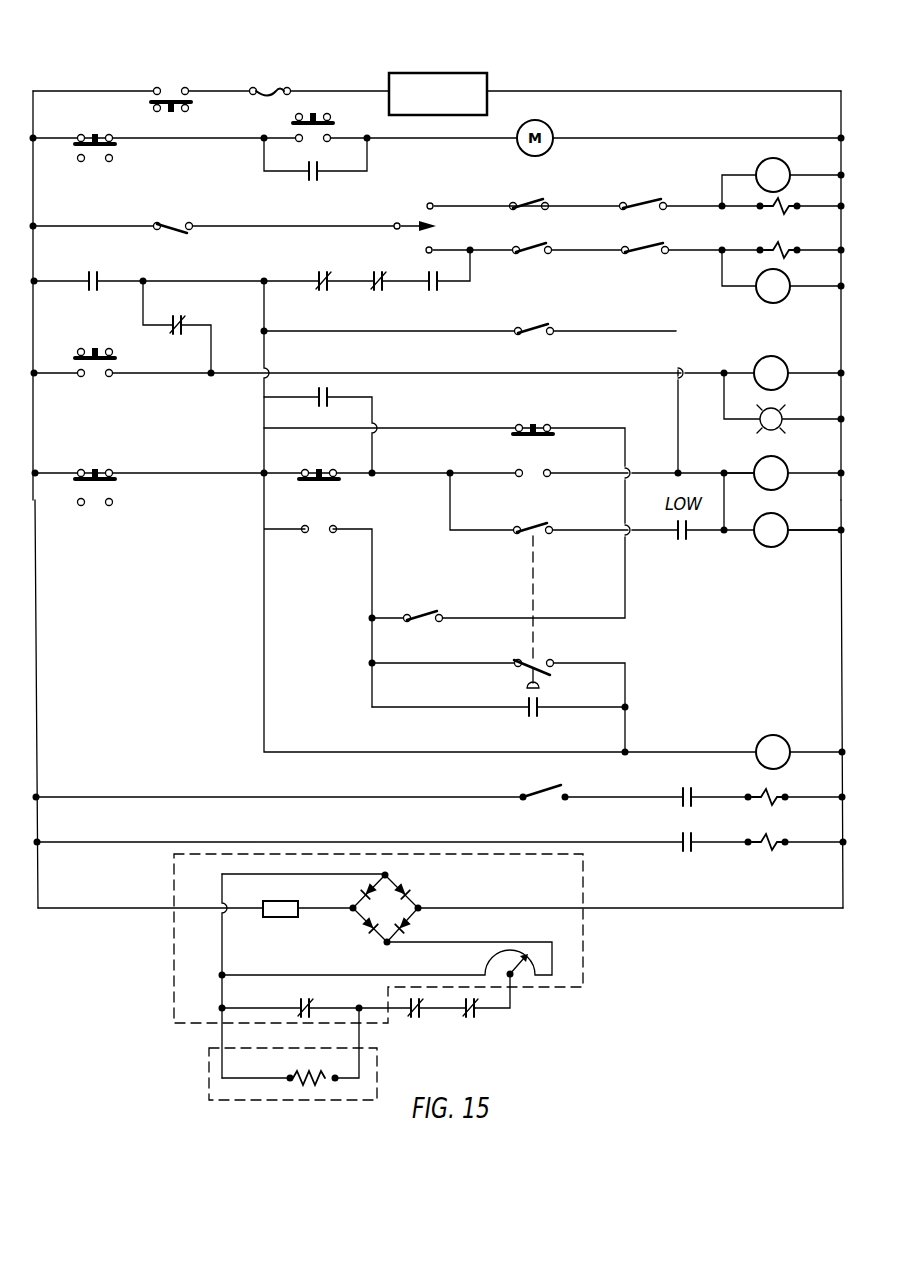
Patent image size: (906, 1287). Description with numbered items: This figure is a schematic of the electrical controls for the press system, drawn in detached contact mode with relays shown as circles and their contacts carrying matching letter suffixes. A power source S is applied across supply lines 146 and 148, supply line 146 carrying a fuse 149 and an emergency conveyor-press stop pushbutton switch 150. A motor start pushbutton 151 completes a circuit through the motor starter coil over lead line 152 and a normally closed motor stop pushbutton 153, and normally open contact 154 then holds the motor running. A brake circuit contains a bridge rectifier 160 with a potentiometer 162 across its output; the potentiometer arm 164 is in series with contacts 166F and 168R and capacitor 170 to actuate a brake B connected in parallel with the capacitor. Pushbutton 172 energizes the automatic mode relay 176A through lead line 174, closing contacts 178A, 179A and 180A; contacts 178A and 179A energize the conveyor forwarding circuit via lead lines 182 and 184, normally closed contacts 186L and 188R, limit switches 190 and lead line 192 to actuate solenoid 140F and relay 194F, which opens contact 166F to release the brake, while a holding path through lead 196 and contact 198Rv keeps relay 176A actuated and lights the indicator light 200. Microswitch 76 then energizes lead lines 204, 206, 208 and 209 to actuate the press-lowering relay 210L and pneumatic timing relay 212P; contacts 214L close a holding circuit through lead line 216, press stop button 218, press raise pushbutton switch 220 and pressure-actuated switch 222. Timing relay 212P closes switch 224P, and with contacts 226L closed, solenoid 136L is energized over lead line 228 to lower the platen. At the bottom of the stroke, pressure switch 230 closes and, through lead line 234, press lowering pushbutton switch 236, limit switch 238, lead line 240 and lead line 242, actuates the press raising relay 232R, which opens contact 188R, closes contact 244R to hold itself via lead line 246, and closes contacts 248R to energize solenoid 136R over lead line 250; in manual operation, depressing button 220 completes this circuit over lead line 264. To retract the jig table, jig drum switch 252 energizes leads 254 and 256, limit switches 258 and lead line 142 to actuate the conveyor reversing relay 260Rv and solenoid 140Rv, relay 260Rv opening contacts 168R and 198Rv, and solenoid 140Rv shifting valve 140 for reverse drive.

The supply line 146 is at (26, 94).
The supply line 148 is at (843, 115).
The valve 140 is at (40, 584).
The lead line 142 is at (842, 602).
The emergency conveyor-press stop pushbutton switch 150 is at (172, 93).
The fuse 149 is at (277, 87).
The power source S is at (443, 72).
The lead line 152 is at (55, 138).
The motor stop pushbutton 153 is at (98, 137).
The motor start pushbutton 151 is at (318, 124).
The normally open contact 154 is at (325, 177).
The lead 254 is at (250, 222).
The lead 256 is at (168, 222).
The jig drum switch 252 is at (403, 222).
The limit switches 258 is at (623, 203).
The solenoid 140Rv is at (767, 212).
The conveyor reversing relay 260Rv is at (757, 164).
The lead line 192 is at (708, 252).
The limit switches 190 is at (623, 247).
The solenoid 140F is at (777, 247).
The relay 194F is at (758, 303).
The lead line 182 is at (52, 280).
The normally open contact 178A is at (100, 276).
The lead line 184 is at (197, 280).
The normally closed contact 186L is at (325, 276).
The normally closed contact 188R is at (378, 276).
The normally open contact 179A is at (440, 292).
The lead 196 is at (143, 303).
The contact 198Rv is at (188, 322).
The lead line 204 is at (377, 330).
The microswitch 76 is at (533, 330).
The lead line 174 is at (172, 377).
The pushbutton 172 is at (117, 352).
The automatic mode relay 176A is at (781, 355).
The automatic mode indicator light 200 is at (784, 413).
The normally open contact 180A is at (333, 386).
The lead line 234 is at (342, 430).
The press lowering pushbutton switch 236 is at (533, 423).
The lead line 216 is at (180, 472).
The press stop button 218 is at (102, 468).
The press raise pushbutton switch 220 is at (327, 483).
The lead line 206 is at (738, 472).
The press-lowering relay 210L is at (785, 465).
The pressure-actuated switch 222 is at (533, 527).
The normally open contacts 214L is at (682, 539).
The lead line 208 is at (727, 522).
The pneumatic timing relay 212P is at (785, 520).
The lead line 209 is at (820, 533).
The lead line 264 is at (264, 557).
The limit switch 238 is at (422, 612).
The lead line 240 is at (450, 662).
The pressure switch 230 is at (543, 662).
The lead line 246 is at (450, 707).
The normally open contact 244R is at (540, 718).
The lead line 242 is at (670, 752).
The press raising relay 232R is at (793, 722).
The lead line 228 is at (118, 795).
The switch 224P is at (546, 790).
The normally open contacts 226L is at (688, 790).
The solenoid 136L is at (777, 793).
The lead line 250 is at (118, 840).
The normally open contacts 248R is at (692, 835).
The solenoid 136R is at (777, 837).
The bridge rectifier 160 is at (420, 898).
The potentiometer 162 is at (488, 961).
The potentiometer arm 164 is at (520, 968).
The normally closed contact 166F is at (477, 1020).
The normally closed contact 168R is at (417, 1022).
The capacitor 170 is at (312, 1003).
The brake B is at (312, 1103).